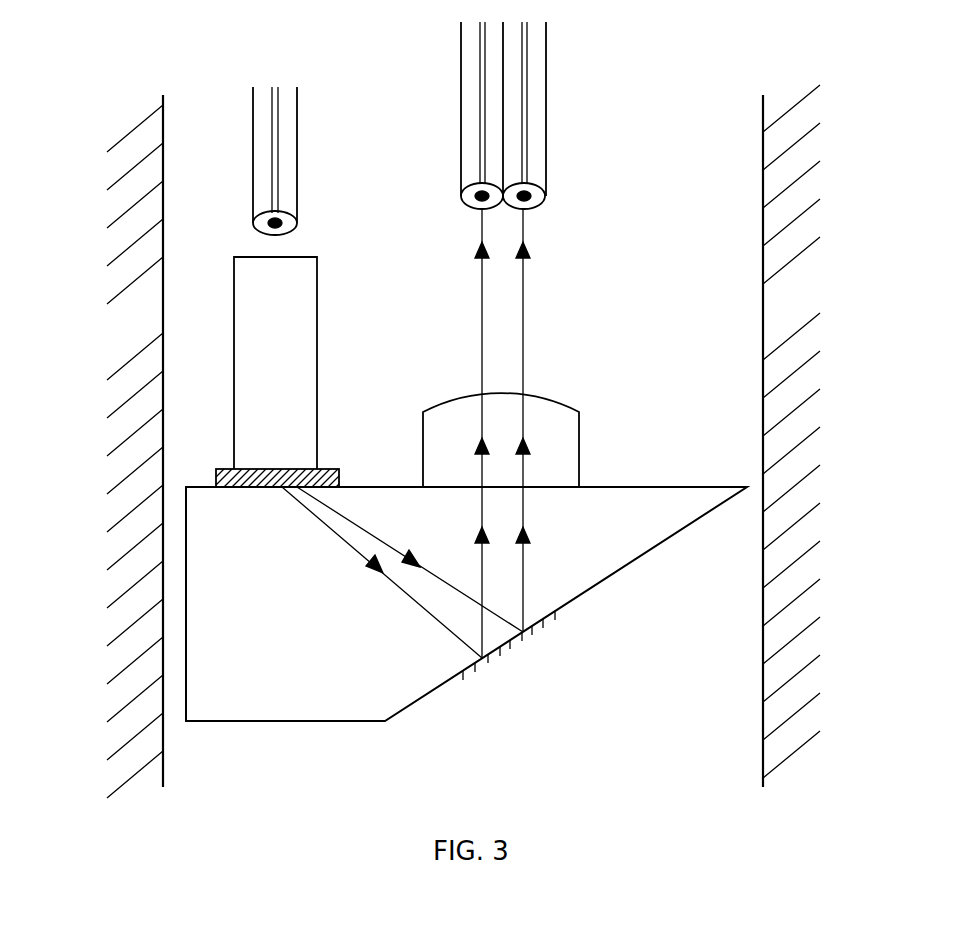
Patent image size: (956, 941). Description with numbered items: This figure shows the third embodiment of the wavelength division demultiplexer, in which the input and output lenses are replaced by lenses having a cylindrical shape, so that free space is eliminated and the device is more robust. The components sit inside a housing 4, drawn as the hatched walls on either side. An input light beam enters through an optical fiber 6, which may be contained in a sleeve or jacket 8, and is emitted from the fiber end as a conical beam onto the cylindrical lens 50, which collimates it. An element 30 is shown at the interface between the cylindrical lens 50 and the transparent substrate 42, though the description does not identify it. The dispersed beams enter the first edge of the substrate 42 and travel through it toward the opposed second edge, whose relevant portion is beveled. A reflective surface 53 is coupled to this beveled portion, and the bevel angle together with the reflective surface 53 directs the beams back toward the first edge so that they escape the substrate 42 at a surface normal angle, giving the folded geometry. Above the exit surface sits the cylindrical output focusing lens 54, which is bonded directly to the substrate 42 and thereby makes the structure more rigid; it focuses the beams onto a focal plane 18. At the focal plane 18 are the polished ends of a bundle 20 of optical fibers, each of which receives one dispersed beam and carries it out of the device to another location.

The housing 4 is at (463, 441).
The optical fiber 6 is at (287, 122).
The sleeve or jacket 8 is at (260, 222).
The focal plane 18 is at (632, 196).
The bundle of optical fibers 20 is at (470, 78).
The absorbing coating 30 is at (333, 469).
The substrate 42 is at (224, 696).
The cylindrical lens 50 is at (292, 330).
The reflective surface 53 is at (509, 646).
The cylindrical output focusing lens 54 is at (560, 437).